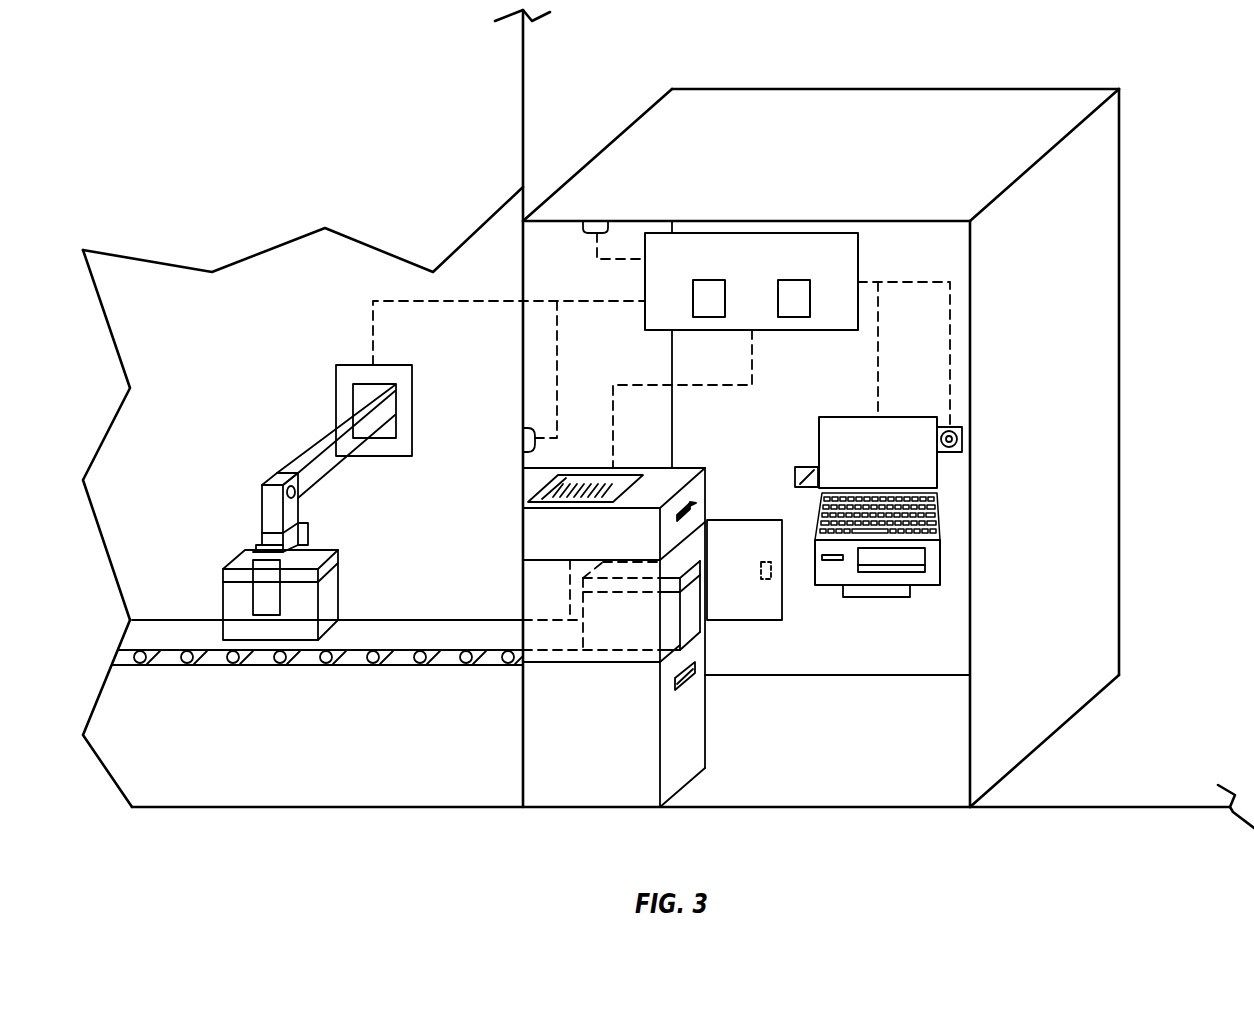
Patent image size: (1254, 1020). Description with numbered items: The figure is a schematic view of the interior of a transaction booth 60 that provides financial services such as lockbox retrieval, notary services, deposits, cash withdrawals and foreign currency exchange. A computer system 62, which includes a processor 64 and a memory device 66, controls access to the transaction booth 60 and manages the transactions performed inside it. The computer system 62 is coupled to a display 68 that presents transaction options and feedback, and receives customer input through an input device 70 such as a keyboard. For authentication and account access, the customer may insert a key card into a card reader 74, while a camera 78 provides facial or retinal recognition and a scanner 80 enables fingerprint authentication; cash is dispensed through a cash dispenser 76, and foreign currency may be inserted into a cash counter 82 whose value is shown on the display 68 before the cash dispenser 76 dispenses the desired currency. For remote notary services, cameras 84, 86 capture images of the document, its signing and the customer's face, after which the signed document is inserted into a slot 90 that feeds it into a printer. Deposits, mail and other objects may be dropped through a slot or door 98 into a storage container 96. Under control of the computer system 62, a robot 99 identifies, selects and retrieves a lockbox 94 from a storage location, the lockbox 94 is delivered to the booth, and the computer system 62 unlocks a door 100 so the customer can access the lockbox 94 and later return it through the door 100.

The transaction booth 60 is at (897, 88).
The computer system 62 is at (752, 233).
The processor 64 is at (692, 293).
The memory device 66 is at (792, 317).
The display 68 is at (850, 417).
The input device 70 is at (937, 512).
The card reader 74 is at (833, 562).
The cash dispenser 76 is at (927, 558).
The camera 78 is at (962, 439).
The scanner 80 is at (807, 467).
The cash counter 82 is at (878, 600).
The camera 84 is at (613, 227).
The camera 86 is at (530, 428).
The slot 90 is at (695, 505).
The lockbox 94 is at (340, 588).
The storage container 96 is at (685, 785).
The slot or door 98 is at (688, 683).
The robot 99 is at (274, 369).
The door 100 is at (782, 570).